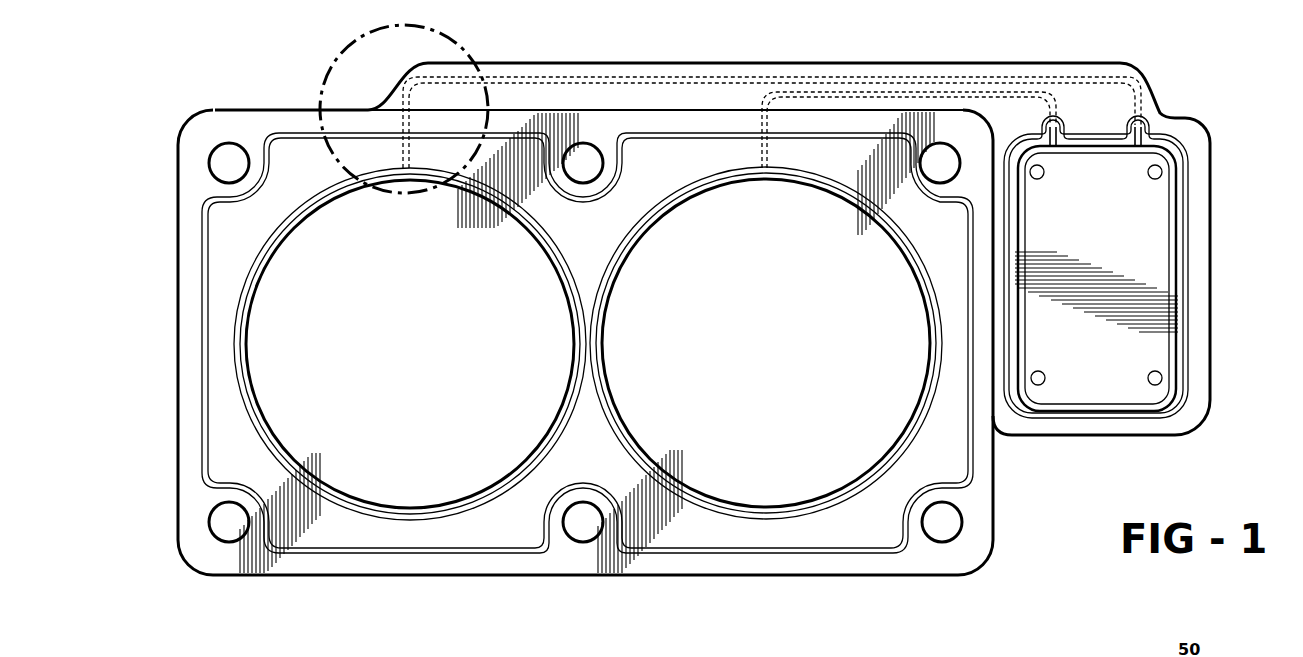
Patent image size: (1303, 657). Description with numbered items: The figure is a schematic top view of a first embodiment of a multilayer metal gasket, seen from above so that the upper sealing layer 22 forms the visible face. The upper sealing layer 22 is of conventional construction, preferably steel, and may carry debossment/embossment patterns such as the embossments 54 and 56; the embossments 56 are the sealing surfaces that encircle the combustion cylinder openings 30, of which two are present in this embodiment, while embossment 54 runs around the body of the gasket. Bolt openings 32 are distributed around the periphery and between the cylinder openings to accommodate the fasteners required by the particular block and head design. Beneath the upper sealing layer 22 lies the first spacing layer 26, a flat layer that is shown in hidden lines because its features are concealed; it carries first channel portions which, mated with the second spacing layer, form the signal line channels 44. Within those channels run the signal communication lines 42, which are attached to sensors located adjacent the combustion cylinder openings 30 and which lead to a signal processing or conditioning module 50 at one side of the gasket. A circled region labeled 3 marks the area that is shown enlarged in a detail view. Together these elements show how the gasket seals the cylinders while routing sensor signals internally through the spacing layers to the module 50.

The detail view circle (FIG. 3) 3 is at (320, 97).
The upper sealing layer 22 is at (990, 517).
The first spacing layer 26 is at (680, 82).
The combustion cylinder opening 30 is at (745, 203).
The bolt opening 32 is at (218, 166).
The signal communication line 42 is at (1060, 130).
The signal line channel 44 is at (848, 95).
The signal processing or conditioning module 50 is at (1187, 240).
The embossment 54 is at (968, 462).
The embossment 56 is at (460, 510).